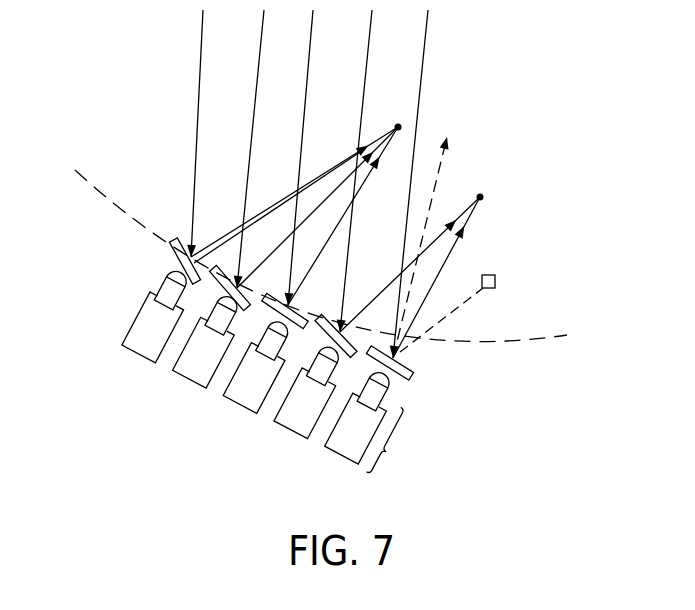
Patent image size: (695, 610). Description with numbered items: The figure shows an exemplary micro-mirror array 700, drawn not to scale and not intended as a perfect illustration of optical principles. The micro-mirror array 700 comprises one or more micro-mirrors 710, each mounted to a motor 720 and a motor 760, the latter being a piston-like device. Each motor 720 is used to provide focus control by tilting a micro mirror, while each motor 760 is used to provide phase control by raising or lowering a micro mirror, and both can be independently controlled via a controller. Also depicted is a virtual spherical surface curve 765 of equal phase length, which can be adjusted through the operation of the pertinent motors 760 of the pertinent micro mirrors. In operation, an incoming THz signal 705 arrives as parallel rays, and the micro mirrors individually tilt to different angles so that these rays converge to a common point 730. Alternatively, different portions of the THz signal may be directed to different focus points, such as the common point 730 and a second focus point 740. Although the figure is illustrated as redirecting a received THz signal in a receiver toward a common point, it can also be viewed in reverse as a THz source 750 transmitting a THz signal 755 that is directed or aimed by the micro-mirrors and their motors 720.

The micro-mirror array 700 is at (116, 494).
The THz signal 705 is at (200, 38).
The micro-mirror 710 is at (175, 252).
The motor 720 is at (411, 378).
The common point 730 is at (398, 127).
The focus point 740 is at (480, 197).
The THz source 750 is at (495, 281).
The THz signal 755 is at (447, 137).
The motor 760 is at (386, 452).
The virtual spherical surface curve of equal phase length 765 is at (527, 341).